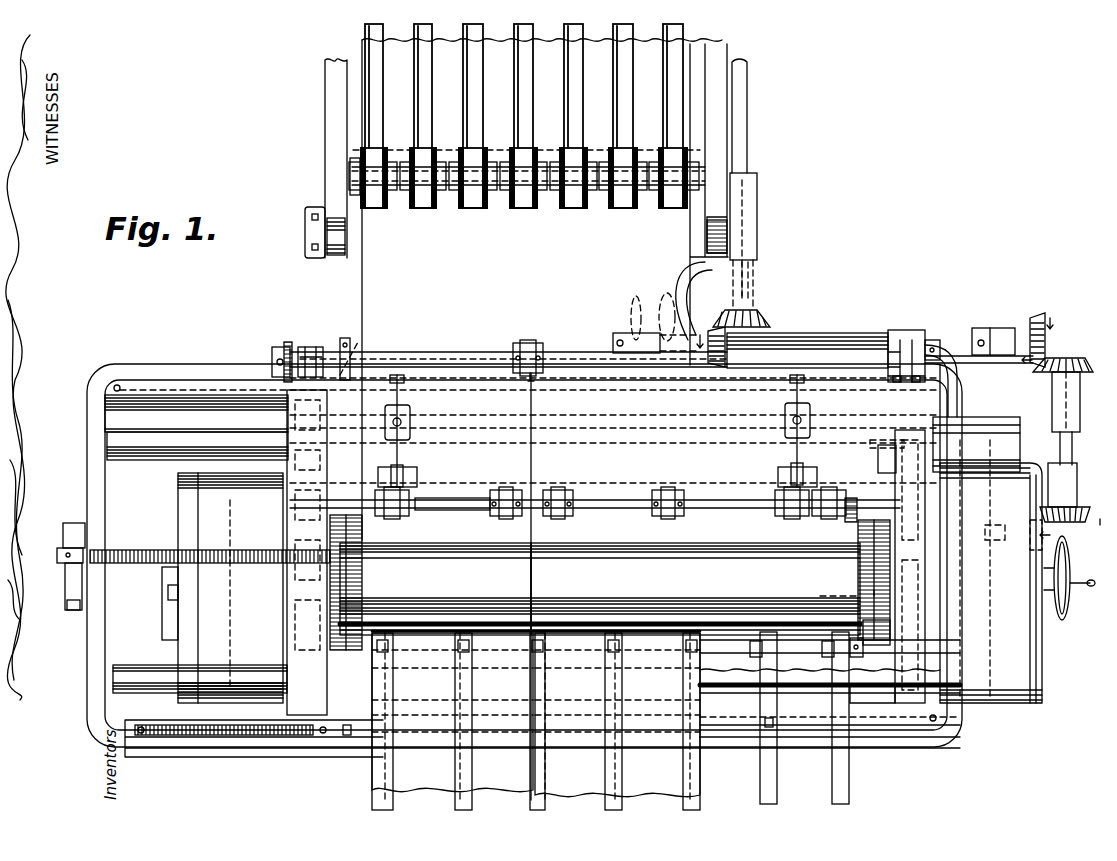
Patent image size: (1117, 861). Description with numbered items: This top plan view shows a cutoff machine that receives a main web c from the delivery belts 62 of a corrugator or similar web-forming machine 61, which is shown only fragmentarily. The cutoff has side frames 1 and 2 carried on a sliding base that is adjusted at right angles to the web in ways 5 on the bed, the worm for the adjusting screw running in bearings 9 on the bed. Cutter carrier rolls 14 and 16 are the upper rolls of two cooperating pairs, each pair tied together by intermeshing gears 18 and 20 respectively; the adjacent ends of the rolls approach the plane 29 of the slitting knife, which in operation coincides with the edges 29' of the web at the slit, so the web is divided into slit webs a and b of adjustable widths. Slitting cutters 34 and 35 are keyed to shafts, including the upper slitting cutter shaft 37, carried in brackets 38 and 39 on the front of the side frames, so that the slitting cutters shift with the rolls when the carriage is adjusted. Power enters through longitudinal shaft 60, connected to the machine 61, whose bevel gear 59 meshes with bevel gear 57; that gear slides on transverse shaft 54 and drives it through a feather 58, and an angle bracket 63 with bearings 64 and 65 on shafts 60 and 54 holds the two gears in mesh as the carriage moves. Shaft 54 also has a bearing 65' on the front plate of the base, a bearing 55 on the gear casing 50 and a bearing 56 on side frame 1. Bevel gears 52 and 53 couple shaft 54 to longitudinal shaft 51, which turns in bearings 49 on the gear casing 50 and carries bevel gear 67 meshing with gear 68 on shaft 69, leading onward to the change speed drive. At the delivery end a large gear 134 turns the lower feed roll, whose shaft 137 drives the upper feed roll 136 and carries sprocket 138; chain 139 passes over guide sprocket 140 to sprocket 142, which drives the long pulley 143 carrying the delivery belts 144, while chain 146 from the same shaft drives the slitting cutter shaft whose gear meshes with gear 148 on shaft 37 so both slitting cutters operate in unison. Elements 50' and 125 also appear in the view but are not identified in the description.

The side frame 1 is at (885, 716).
The side frame 2 is at (327, 700).
The ways 5 is at (186, 427).
The bearings 9 is at (95, 527).
The cutter carrier roll 14 is at (478, 582).
The cutter carrier roll 16 is at (690, 582).
The intermeshing gear 18 is at (362, 578).
The intermeshing gear 20 is at (858, 584).
The plane of the slitting knife 29 is at (595, 519).
The edges of the web at the slit 29' is at (530, 430).
The slitting cutter 34 is at (533, 342).
The slitting cutter 35 is at (346, 337).
The upper slitting cutter shaft 37 is at (416, 351).
The bracket 38 is at (891, 330).
The bracket 39 is at (316, 347).
The bearings 49 is at (1078, 420).
The gear casing 50 is at (1007, 560).
The drum 50' is at (207, 588).
The longitudinal shaft 51 is at (1074, 443).
The bevel gear 52 is at (1084, 358).
The bevel gear 53 is at (1048, 320).
The transverse shaft 54 is at (803, 335).
The bearing 55 is at (1005, 328).
The bearing 56 is at (930, 340).
The bevel gear 57 is at (720, 326).
The feather 58 is at (841, 335).
The bevel gear 59 is at (760, 310).
The longitudinal shaft 60 is at (750, 130).
The machine 61 is at (725, 53).
The delivery belts 62 is at (544, 78).
The angle bracket 63 is at (698, 273).
The bearing 64 is at (748, 280).
The bearing 65 is at (660, 315).
The bearing 65' is at (626, 316).
The bevel gear 67 is at (1080, 525).
The gear 68 is at (1030, 550).
The shaft 69 is at (995, 540).
The hand wheel 125 is at (1070, 586).
The large gear 134 is at (938, 440).
The upper feed roll 136 is at (507, 491).
The shaft 137 is at (468, 512).
The sprocket 138 is at (870, 427).
The chain 139 is at (833, 597).
The guide sprocket 140 is at (844, 527).
The sprocket 142 is at (850, 645).
The long pulley 143 is at (710, 629).
The delivery belts 144 is at (836, 760).
The chain 146 is at (370, 348).
The gear 148 is at (290, 344).
The slit web a is at (400, 790).
The web section b is at (700, 787).
The main web c is at (363, 265).